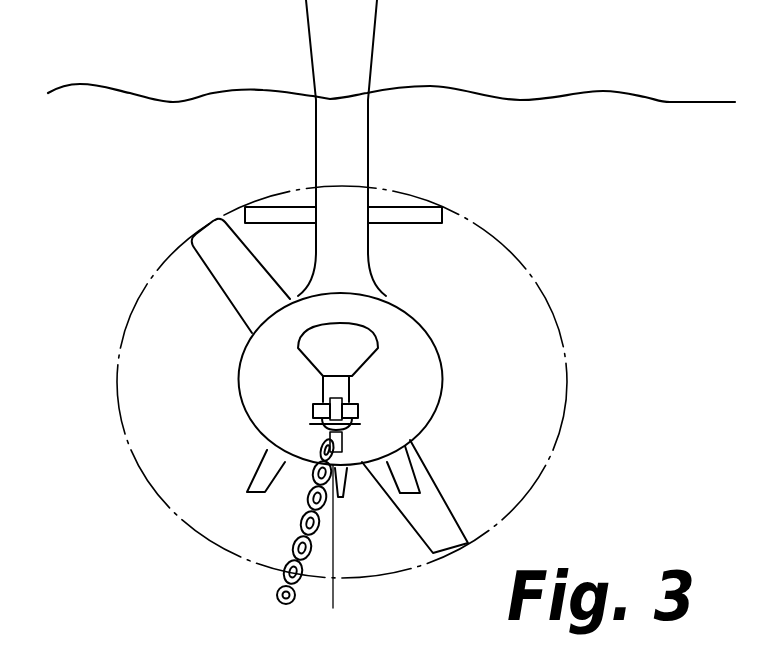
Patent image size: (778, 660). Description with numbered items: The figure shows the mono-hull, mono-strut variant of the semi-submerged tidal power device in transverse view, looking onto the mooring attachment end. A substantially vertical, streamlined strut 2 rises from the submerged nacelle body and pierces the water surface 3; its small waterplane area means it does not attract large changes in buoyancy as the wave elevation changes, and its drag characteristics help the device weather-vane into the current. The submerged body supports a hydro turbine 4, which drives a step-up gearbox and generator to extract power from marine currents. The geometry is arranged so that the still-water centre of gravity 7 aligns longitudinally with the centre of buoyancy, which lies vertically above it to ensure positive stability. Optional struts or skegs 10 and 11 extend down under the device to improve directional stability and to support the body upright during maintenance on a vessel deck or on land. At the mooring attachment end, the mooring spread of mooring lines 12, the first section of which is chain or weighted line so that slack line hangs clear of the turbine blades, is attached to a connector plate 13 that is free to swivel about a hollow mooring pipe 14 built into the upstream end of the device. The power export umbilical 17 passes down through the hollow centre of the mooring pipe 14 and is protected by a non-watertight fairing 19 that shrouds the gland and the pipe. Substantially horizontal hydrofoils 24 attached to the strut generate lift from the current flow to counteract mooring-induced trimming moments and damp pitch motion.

The strut 2 is at (363, 158).
The water surface 3 is at (650, 96).
The hydro turbine 4 is at (212, 293).
The centre of gravity 7 is at (250, 428).
The strut or skeg 10 is at (412, 483).
The strut or skeg 11 is at (344, 486).
The mooring line 12 is at (275, 594).
The connector plate 13 is at (314, 407).
The hollow mooring pipe 14 is at (349, 390).
The power export umbilical 17 is at (334, 601).
The fairing 19 is at (373, 338).
The hydrofoil 24 is at (262, 207).